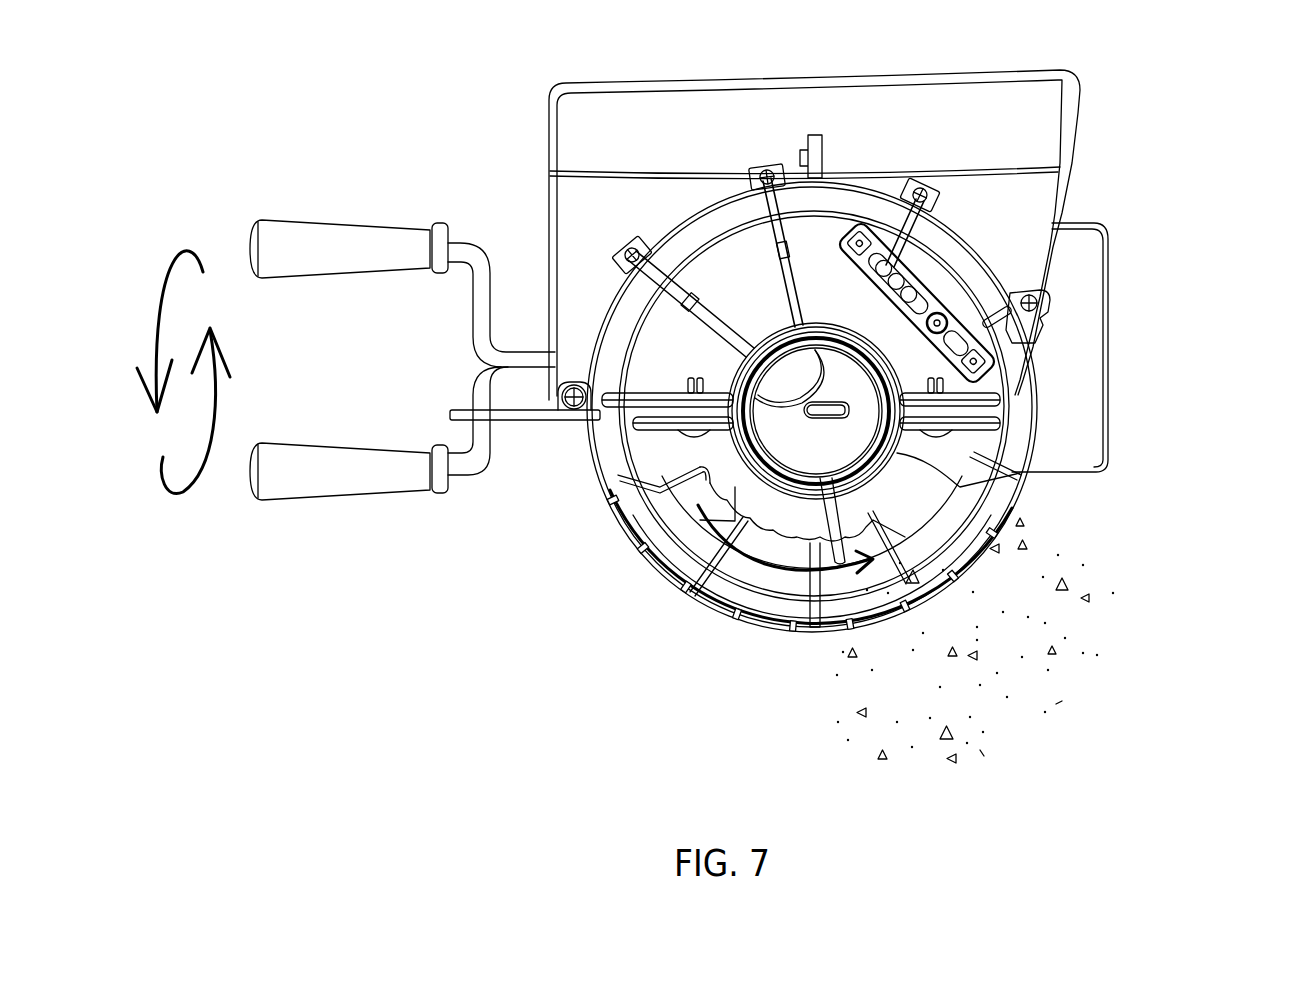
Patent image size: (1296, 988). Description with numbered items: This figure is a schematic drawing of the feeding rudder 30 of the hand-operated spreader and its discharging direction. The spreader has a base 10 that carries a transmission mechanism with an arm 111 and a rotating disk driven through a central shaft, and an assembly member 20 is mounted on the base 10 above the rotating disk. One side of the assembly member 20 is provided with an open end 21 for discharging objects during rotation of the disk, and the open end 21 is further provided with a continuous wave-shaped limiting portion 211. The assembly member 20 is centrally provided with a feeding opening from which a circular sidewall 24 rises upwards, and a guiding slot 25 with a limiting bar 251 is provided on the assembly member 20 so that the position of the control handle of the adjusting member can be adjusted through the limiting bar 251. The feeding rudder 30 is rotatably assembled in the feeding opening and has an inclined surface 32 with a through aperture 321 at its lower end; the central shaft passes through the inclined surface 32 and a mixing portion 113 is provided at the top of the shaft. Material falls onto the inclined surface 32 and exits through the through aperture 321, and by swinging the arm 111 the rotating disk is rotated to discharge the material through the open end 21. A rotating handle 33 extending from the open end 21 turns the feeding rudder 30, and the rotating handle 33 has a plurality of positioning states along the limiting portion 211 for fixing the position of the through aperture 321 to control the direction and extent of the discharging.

The base 10 is at (1138, 308).
The assembly member 20 is at (644, 205).
The open end 21 is at (697, 485).
The continuous wave-shaped limiting portion 211 is at (716, 500).
The circular sidewall 24 is at (945, 484).
The guiding slot 25 is at (898, 278).
The limiting bar 251 is at (1000, 293).
The feeding rudder 30 is at (738, 446).
The inclined surface 32 is at (842, 368).
The through aperture 321 is at (780, 390).
The rotating handle 33 is at (833, 566).
The arm 111 is at (293, 465).
The mixing portion 113 is at (850, 413).